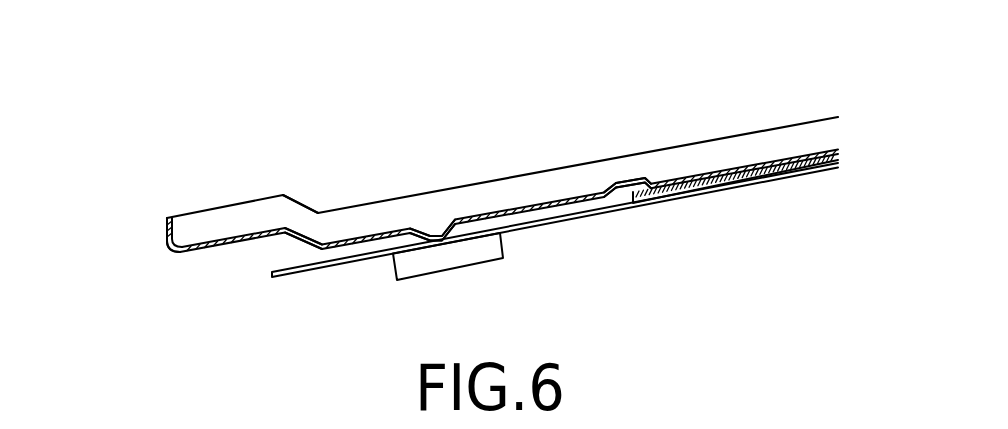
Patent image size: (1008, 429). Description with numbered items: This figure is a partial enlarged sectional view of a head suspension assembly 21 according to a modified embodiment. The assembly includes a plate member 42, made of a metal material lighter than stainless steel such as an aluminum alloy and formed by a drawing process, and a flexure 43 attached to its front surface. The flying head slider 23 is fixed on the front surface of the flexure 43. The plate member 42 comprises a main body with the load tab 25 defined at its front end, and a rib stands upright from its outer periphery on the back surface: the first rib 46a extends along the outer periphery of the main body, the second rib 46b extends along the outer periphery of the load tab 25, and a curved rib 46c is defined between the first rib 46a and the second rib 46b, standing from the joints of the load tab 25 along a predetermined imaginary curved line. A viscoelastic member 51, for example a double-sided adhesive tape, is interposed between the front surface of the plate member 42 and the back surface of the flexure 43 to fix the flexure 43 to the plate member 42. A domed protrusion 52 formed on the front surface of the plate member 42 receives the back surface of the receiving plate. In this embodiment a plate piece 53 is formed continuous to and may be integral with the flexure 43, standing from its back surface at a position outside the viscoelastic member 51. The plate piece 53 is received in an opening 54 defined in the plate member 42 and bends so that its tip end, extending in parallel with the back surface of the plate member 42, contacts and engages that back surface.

The head suspension assembly 21 is at (358, 137).
The flying head slider 23 is at (413, 278).
The load tab 25 is at (172, 252).
The plate member 42 is at (730, 135).
The flexure 43 is at (317, 270).
The first rib 46a is at (512, 175).
The second rib 46b is at (167, 218).
The curved rib 46c is at (293, 180).
The viscoelastic member 51 is at (707, 190).
The domed protrusion 52 is at (410, 226).
The plate piece 53 is at (633, 180).
The opening 54 is at (602, 195).